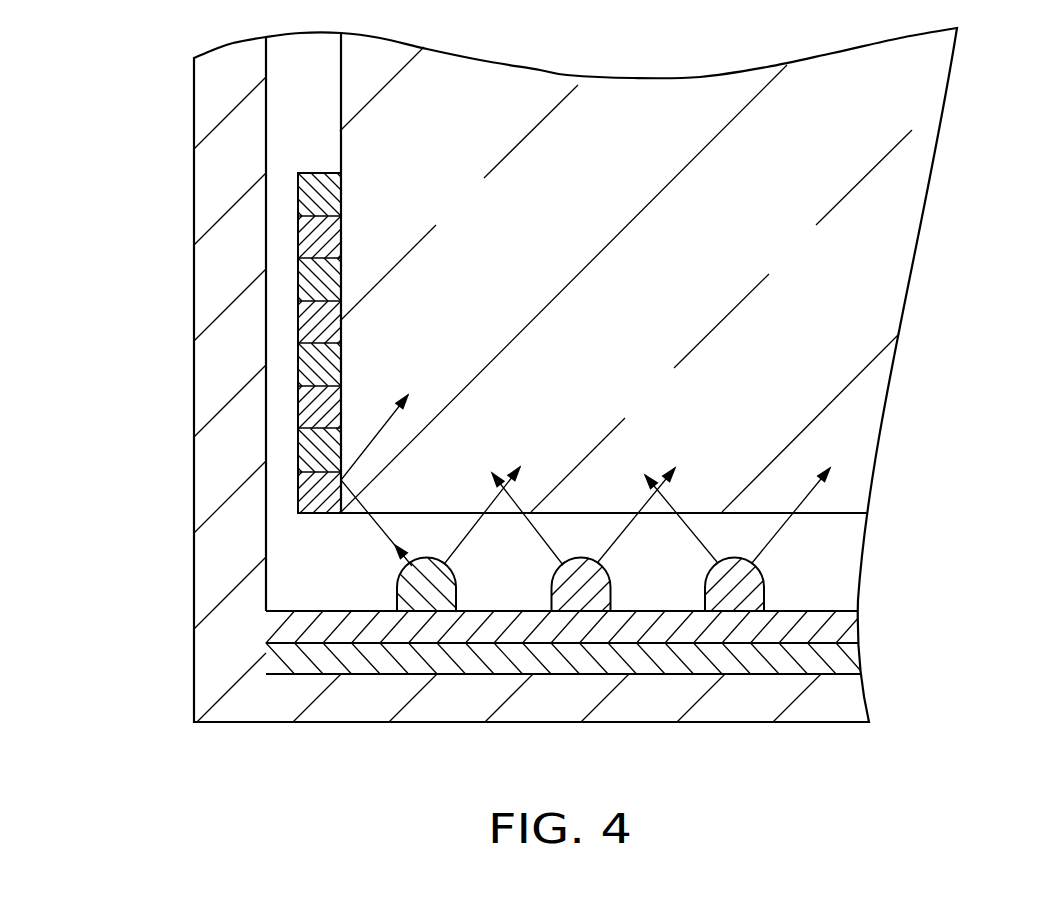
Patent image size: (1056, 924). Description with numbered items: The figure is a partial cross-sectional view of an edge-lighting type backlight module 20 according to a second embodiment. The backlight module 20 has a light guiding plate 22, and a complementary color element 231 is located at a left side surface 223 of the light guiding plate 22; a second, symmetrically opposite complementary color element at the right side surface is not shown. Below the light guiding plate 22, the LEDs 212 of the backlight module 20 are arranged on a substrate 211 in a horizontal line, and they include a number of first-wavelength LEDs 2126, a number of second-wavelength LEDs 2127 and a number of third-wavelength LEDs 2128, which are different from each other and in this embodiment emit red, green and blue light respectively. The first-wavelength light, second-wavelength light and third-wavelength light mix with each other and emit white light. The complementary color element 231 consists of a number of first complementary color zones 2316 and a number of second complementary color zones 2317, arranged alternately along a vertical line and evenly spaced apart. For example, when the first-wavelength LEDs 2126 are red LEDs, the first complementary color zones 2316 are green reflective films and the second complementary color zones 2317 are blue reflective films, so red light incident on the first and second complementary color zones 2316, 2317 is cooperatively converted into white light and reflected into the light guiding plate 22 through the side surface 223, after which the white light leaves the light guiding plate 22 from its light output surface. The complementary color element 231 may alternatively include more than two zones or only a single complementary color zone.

The edge-lighting type backlight module 20 is at (738, 48).
The light guiding plate 22 is at (863, 115).
The left side surface 223 is at (341, 105).
The complementary color element 231 is at (87, 282).
The first complementary color zones 2316 is at (318, 368).
The second complementary color zones 2317 is at (320, 329).
The substrate 211 is at (290, 625).
The LEDs 212 is at (585, 595).
The first-wavelength LEDs 2126 is at (432, 590).
The second-wavelength LEDs 2127 is at (587, 582).
The third-wavelength LEDs 2128 is at (737, 660).